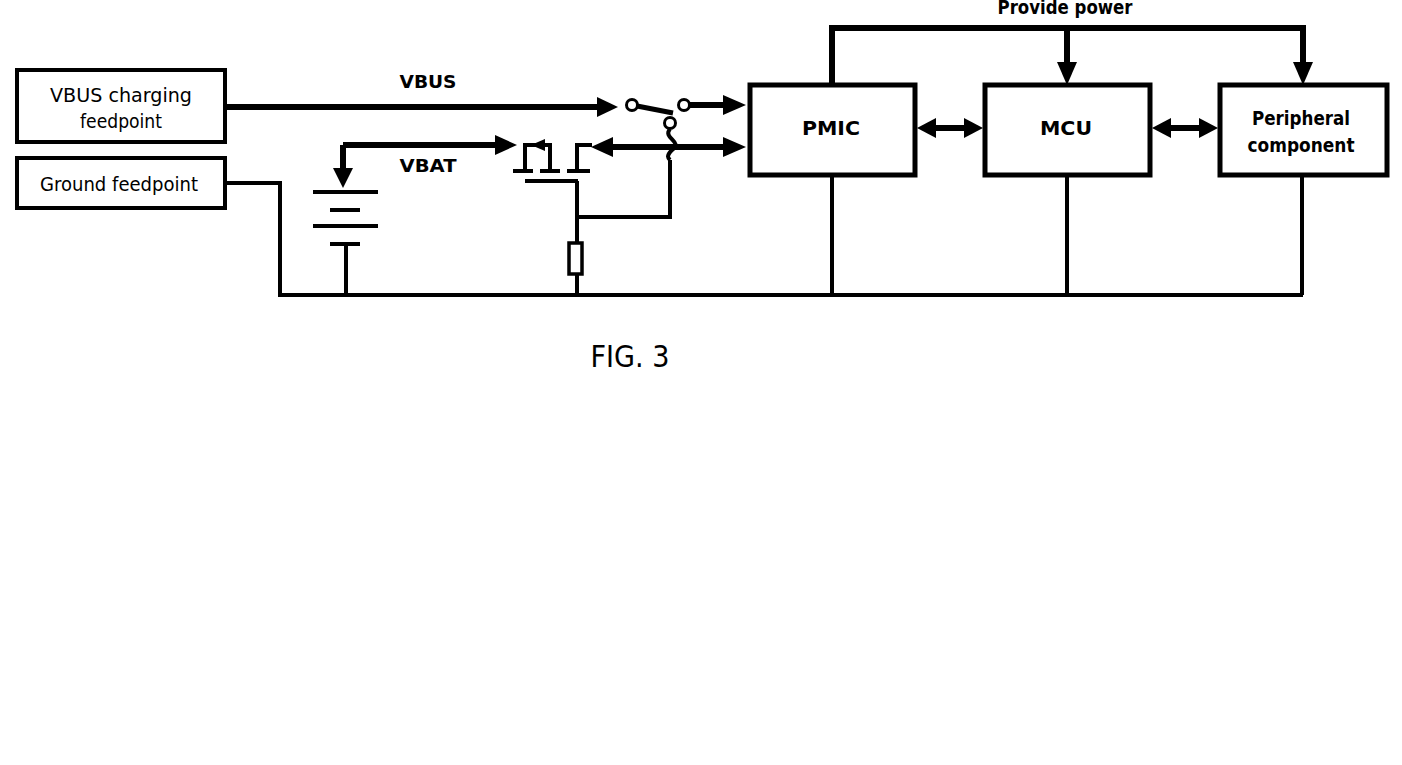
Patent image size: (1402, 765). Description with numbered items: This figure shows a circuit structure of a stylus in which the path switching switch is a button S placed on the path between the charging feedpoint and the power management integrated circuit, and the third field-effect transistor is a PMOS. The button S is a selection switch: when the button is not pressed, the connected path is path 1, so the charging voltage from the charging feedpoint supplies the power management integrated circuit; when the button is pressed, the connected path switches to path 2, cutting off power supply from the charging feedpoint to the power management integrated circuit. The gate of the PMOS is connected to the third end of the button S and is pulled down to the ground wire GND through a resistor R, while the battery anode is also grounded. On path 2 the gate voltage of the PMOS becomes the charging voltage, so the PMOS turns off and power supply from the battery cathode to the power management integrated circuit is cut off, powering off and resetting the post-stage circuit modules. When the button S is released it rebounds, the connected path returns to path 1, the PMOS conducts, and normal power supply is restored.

The path 1 is at (692, 94).
The path 2 is at (659, 130).
The resistor R is at (561, 258).
The button S is at (608, 92).
The ground wire GND is at (764, 250).